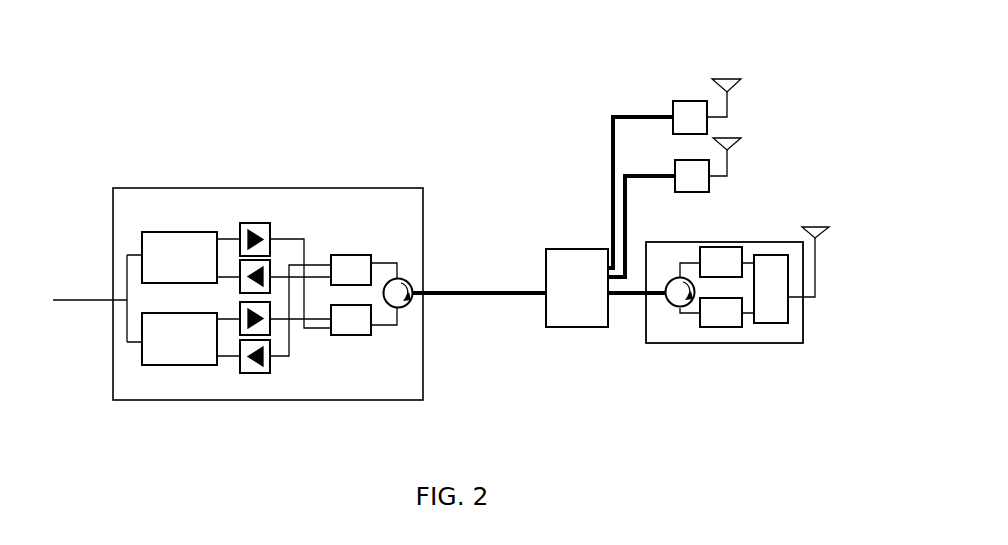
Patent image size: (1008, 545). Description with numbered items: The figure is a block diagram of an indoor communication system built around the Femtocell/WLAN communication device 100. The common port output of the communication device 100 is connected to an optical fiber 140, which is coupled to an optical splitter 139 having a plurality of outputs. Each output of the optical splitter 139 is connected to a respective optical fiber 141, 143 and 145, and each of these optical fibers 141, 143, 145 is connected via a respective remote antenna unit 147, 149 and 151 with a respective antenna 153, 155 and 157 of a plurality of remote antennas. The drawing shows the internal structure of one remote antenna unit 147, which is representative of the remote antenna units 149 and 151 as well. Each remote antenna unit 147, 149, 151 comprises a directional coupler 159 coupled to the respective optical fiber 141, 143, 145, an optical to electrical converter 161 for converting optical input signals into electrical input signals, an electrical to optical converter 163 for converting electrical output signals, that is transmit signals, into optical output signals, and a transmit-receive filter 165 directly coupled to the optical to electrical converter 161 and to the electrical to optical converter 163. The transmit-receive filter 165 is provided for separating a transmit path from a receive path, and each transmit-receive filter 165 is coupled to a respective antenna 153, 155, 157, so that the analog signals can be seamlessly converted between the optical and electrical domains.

The Femtocell/WLAN communication device 100 is at (319, 207).
The optical splitter 139 is at (559, 328).
The optical fiber 140 is at (473, 296).
The optical fiber 141 is at (633, 296).
The optical fiber 143 is at (620, 207).
The optical fiber 145 is at (611, 125).
The remote antenna unit 147 is at (662, 330).
The remote antenna unit 149 is at (712, 183).
The remote antenna unit 151 is at (673, 100).
The antenna 153 is at (803, 225).
The antenna 155 is at (737, 140).
The antenna 157 is at (730, 77).
The directional coupler 159 is at (675, 278).
The optical to electrical converter 161 is at (740, 278).
The electrical to optical converter 163 is at (713, 327).
The transmit-receive filter (RX/TX) 165 is at (782, 323).